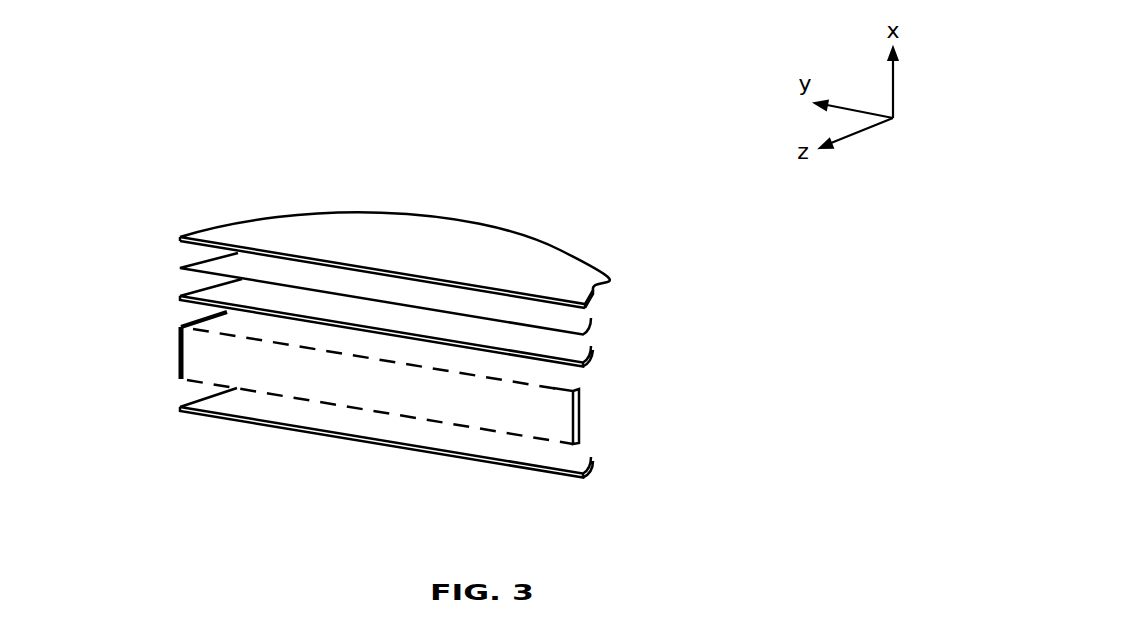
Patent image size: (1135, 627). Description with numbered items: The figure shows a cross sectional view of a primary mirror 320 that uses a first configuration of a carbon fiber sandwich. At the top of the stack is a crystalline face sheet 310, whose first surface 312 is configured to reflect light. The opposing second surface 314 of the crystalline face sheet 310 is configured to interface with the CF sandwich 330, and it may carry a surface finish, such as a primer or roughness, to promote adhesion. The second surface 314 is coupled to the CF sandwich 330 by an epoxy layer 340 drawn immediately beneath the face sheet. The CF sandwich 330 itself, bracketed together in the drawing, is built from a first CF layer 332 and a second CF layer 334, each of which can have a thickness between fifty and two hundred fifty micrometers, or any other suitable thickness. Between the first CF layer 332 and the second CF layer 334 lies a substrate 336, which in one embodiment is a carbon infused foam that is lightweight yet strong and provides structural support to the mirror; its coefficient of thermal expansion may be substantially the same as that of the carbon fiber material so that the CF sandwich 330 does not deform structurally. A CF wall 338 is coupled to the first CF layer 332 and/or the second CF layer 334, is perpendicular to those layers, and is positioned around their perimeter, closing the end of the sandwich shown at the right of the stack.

The primary mirror 320 is at (135, 52).
The crystalline face sheet 310 is at (480, 244).
The first surface 312 is at (354, 242).
The second surface 314 is at (197, 257).
The epoxy layer 340 is at (588, 320).
The CF sandwich 330 is at (815, 295).
The first CF layer 332 is at (588, 357).
The substrate 336 is at (527, 413).
The CF wall 338 is at (583, 420).
The second CF layer 334 is at (557, 481).